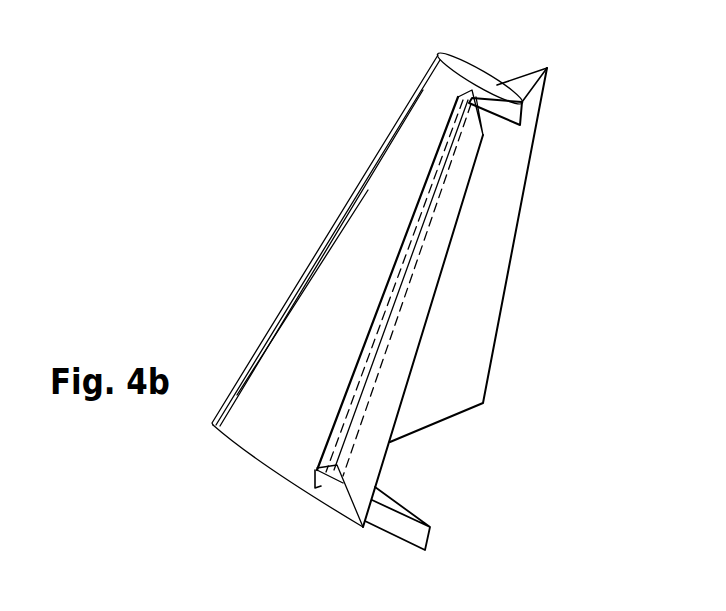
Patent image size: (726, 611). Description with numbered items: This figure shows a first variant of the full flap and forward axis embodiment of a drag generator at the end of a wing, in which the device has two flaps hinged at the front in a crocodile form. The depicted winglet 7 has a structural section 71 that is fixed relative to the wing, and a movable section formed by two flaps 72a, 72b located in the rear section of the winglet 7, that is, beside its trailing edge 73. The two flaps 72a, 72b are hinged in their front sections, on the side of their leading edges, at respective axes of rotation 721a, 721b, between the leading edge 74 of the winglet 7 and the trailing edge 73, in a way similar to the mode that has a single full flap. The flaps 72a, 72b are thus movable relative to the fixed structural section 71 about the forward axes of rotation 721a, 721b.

The winglet 7 is at (232, 309).
The structural section 71 is at (332, 293).
The leading edge 74 is at (392, 110).
The flap 72a is at (503, 235).
The flap 72b is at (365, 490).
The axis of rotation 721a is at (480, 97).
The axis of rotation 721b is at (320, 481).
The trailing edge 73 is at (432, 540).